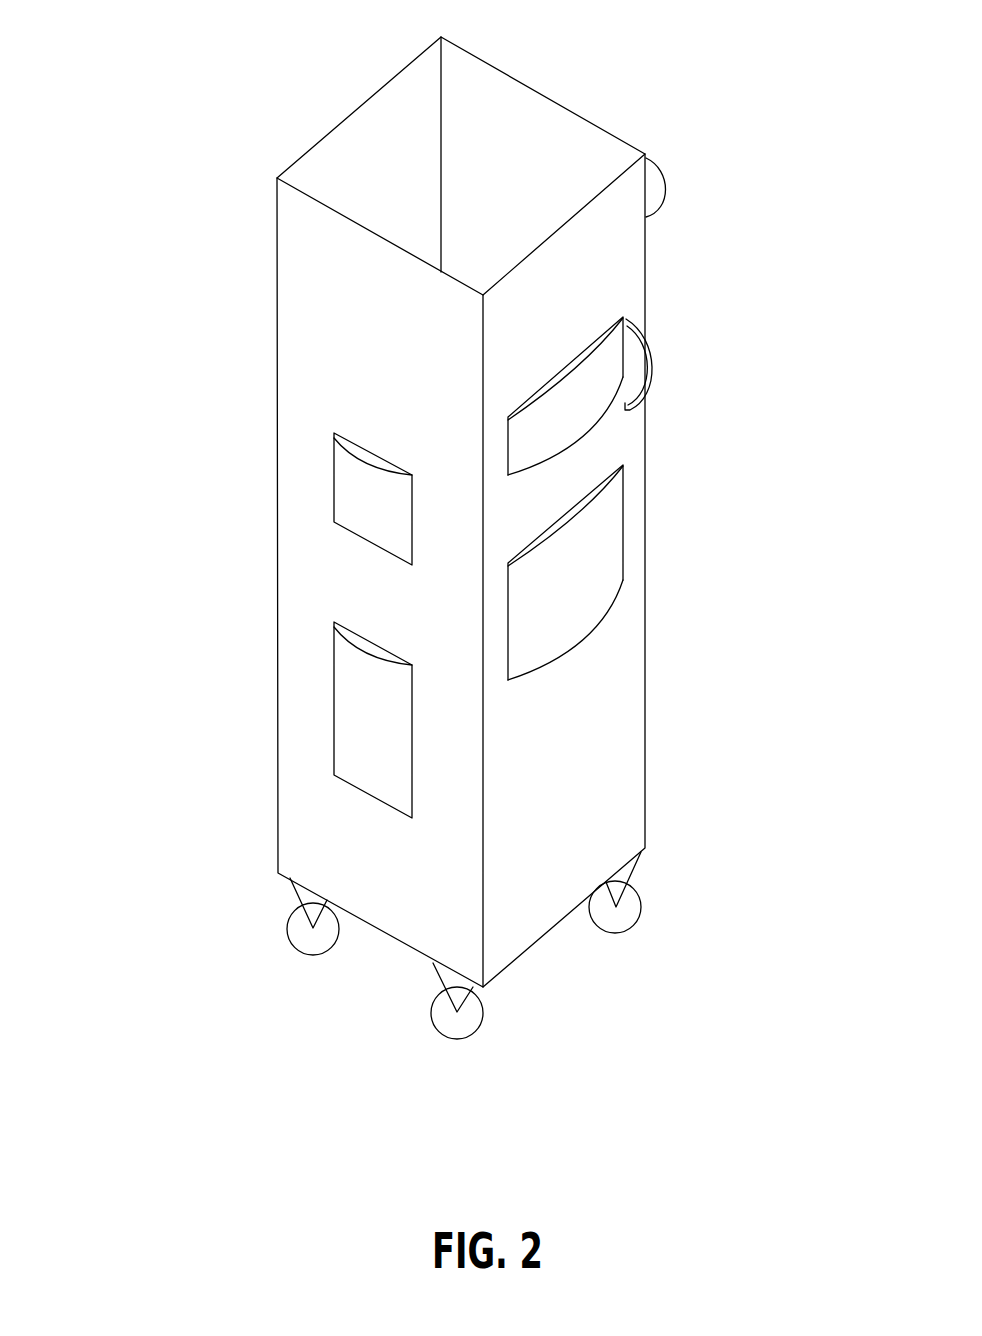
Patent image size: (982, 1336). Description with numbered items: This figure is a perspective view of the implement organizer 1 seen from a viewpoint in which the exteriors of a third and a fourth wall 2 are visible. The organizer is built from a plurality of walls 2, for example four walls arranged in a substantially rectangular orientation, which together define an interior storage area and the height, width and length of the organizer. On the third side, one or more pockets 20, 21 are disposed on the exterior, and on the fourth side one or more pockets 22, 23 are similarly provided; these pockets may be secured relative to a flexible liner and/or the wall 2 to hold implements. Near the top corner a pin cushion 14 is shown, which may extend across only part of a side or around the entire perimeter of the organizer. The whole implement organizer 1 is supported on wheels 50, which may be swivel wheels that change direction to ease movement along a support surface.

The implement organizer 1 is at (108, 143).
The wall 2 is at (368, 127).
The pin cushion 14 is at (652, 190).
The pocket 20 is at (343, 495).
The pocket 21 is at (342, 708).
The pocket 22 is at (609, 375).
The pocket 23 is at (605, 558).
The wheel 50 is at (625, 917).